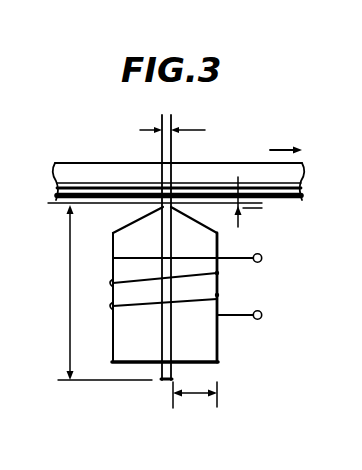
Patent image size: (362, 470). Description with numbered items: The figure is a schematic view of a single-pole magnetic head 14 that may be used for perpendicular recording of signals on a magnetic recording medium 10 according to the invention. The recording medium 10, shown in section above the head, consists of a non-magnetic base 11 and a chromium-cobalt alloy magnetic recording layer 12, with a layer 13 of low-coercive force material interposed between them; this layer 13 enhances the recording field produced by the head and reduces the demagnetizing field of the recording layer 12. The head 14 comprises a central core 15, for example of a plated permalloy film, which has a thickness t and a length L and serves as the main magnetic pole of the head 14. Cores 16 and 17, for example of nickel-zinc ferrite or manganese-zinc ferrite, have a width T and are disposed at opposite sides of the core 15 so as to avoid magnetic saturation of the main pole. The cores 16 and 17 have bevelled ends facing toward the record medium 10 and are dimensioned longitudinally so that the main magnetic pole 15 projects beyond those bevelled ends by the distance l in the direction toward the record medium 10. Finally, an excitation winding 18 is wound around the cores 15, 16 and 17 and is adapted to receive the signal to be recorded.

The magnetic recording medium 10 is at (221, 156).
The non-magnetic base 11 is at (100, 167).
The magnetic recording layer 12 is at (301, 197).
The layer of low-coercive force material 13 is at (300, 184).
The magnetic head 14 is at (305, 266).
The core 15 is at (168, 331).
The core 16 is at (210, 288).
The core 17 is at (113, 306).
The excitation winding 18 is at (112, 281).
The length L is at (70, 278).
The distance l is at (250, 208).
The thickness t is at (172, 116).
The width T is at (197, 395).